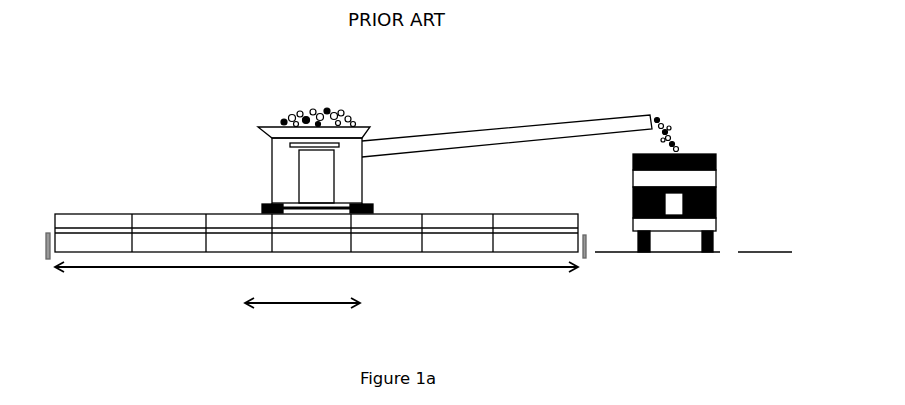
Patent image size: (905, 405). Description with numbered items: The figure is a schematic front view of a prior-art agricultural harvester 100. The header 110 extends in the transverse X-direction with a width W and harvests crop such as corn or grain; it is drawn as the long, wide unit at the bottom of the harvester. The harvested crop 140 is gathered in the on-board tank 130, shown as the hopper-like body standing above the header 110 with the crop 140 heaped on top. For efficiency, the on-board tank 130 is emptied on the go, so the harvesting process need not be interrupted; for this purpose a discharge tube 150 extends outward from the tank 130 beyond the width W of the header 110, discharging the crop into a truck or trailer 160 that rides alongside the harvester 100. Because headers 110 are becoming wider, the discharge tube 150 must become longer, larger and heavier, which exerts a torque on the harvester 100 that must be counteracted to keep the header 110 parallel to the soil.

The agricultural harvester 100 is at (183, 148).
The header 110 is at (112, 218).
The on-board tank 130 is at (342, 165).
The harvested crop 140 is at (315, 112).
The discharge tube 150 is at (510, 133).
The truck 160 is at (693, 182).